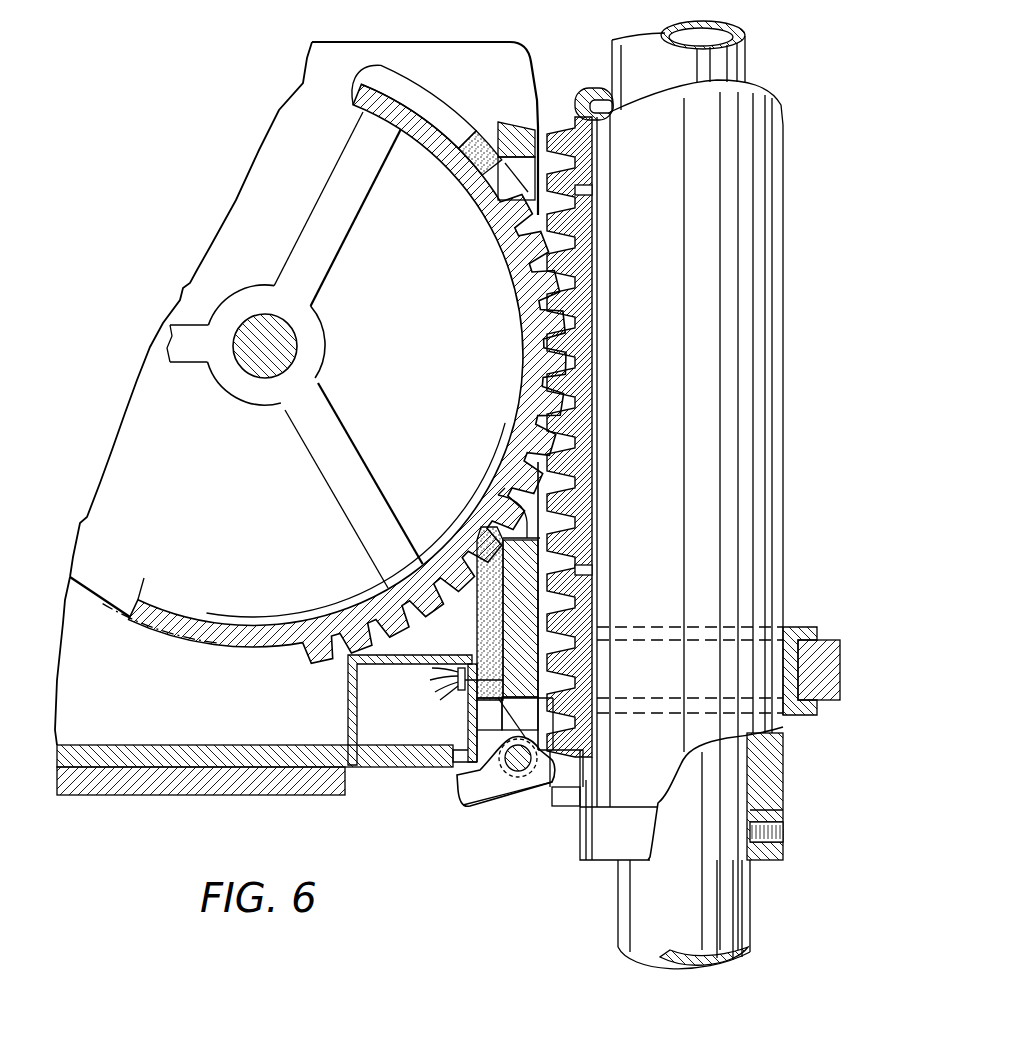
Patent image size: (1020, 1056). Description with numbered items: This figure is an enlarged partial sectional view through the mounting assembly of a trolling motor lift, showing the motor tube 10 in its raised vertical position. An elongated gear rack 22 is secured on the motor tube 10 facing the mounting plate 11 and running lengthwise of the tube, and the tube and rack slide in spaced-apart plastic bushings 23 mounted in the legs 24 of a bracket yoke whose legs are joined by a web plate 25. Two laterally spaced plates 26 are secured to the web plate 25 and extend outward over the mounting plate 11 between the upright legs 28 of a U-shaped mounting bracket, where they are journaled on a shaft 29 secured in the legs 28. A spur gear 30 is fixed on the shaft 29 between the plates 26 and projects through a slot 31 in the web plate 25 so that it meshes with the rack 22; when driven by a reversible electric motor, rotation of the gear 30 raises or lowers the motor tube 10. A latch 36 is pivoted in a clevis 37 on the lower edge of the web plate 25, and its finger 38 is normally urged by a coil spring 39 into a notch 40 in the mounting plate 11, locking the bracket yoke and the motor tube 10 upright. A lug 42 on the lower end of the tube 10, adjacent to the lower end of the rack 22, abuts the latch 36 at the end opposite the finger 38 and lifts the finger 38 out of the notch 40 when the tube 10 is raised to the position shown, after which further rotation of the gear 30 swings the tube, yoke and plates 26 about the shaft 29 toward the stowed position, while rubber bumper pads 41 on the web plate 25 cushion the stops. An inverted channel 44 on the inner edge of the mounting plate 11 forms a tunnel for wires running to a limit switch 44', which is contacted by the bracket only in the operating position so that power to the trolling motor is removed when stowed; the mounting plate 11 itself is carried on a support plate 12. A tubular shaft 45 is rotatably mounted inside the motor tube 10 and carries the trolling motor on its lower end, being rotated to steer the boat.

The motor tube 10 is at (782, 290).
The mounting plate 11 is at (193, 747).
The support plate 12 is at (197, 783).
The gear rack 22 is at (570, 246).
The plastic bushings 23 is at (808, 625).
The legs 24 is at (828, 663).
The web plate 25 is at (513, 603).
The plates 26 is at (223, 638).
The upright legs 28 is at (125, 657).
The shaft 29 is at (288, 341).
The spur gear 30 is at (410, 87).
The slot 31 is at (503, 497).
The latch 36 is at (500, 790).
The clevis 37 is at (497, 727).
The finger 38 is at (468, 790).
The coil spring 39 is at (537, 787).
The notch 40 is at (455, 772).
The rubber bumper pads 41 is at (483, 633).
The lug 42 is at (570, 797).
The inverted channel 44 is at (388, 710).
The limit switch 44' is at (449, 685).
The tubular shaft 45 is at (733, 898).